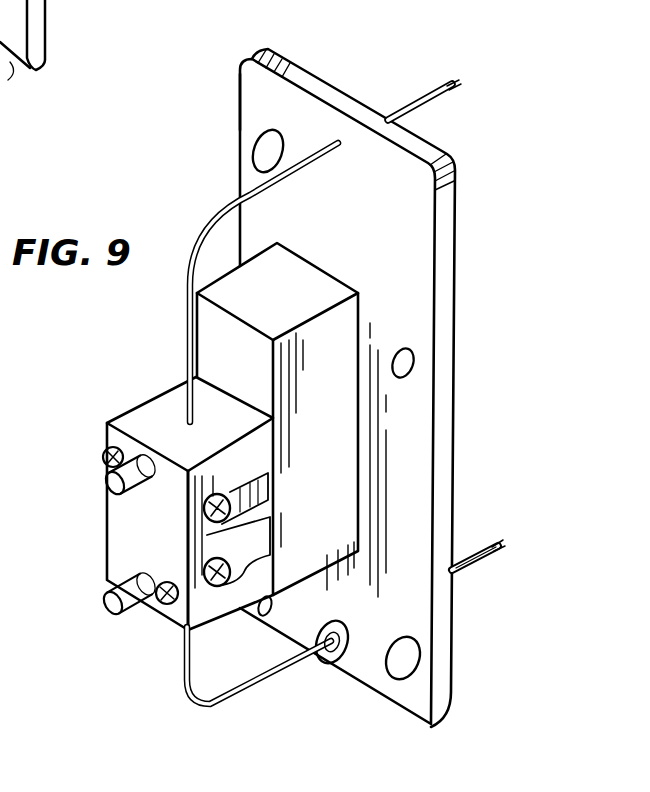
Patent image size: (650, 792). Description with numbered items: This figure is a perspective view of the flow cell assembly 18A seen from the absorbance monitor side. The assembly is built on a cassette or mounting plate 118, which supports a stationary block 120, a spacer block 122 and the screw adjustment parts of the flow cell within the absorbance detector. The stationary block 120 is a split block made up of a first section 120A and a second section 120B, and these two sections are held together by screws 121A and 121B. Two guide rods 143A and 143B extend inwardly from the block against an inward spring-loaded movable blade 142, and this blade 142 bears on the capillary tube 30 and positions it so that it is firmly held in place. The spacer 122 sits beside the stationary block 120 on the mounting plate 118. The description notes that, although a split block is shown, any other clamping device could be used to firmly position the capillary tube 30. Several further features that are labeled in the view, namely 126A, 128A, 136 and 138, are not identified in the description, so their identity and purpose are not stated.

The flow cell assembly 18A is at (379, 42).
The capillary tube 30 is at (417, 104).
The cassette or mounting plate 118 is at (447, 285).
The stationary block 120 is at (186, 492).
The first section of stationary block 120A is at (168, 397).
The second section of stationary block 120B is at (254, 418).
The screw 121A is at (233, 492).
The screw 121B is at (245, 548).
The spacer block 122 is at (300, 283).
The mounting hole 126A is at (408, 664).
The mounting hole 128A is at (258, 152).
The plate edge 136 is at (240, 82).
The lead wire 138 is at (323, 660).
The spring-loaded movable blade 142 is at (222, 404).
The guide rod 143A is at (107, 490).
The guide rod 143B is at (105, 608).